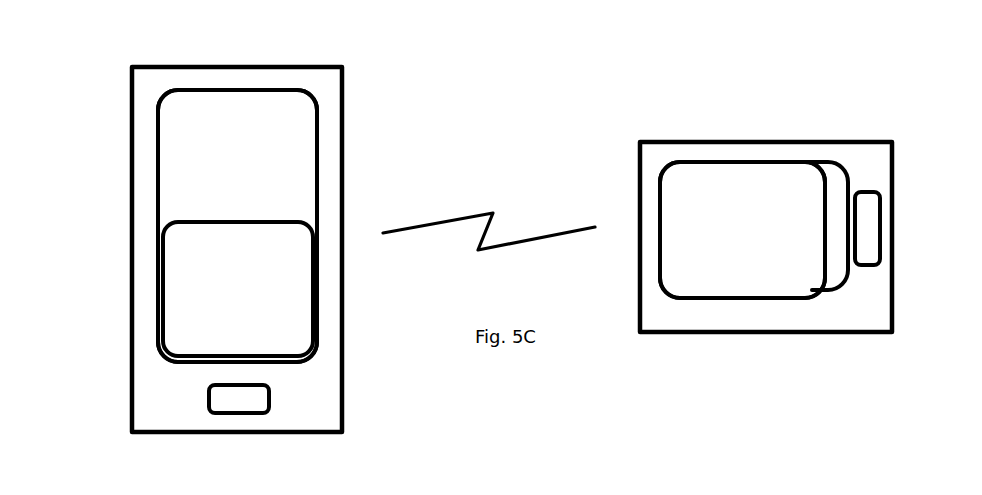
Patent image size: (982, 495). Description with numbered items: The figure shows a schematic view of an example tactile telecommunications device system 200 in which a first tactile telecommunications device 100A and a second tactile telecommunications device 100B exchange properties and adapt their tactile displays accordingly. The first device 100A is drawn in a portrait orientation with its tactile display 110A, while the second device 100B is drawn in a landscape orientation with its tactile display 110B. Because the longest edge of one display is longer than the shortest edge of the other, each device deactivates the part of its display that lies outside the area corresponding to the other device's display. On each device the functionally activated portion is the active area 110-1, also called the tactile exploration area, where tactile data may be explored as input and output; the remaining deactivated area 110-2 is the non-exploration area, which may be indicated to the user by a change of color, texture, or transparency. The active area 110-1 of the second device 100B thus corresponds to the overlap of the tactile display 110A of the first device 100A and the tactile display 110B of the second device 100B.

The tactile telecommunications device system 200 is at (96, 72).
The first tactile telecommunications device 100A is at (342, 98).
The second tactile telecommunications device 100B is at (670, 142).
The tactile display 110A is at (317, 211).
The tactile display 110B is at (828, 158).
The active area 110-1 is at (318, 337).
The deactivated area 110-2 is at (278, 178).